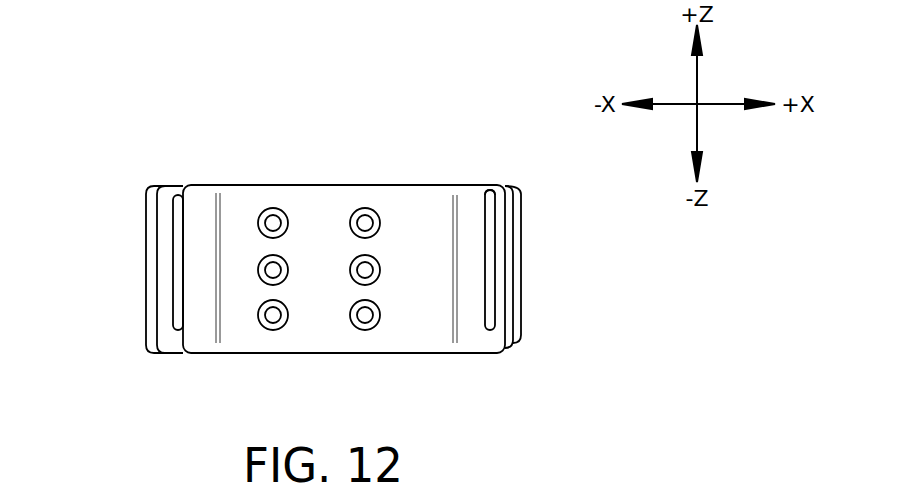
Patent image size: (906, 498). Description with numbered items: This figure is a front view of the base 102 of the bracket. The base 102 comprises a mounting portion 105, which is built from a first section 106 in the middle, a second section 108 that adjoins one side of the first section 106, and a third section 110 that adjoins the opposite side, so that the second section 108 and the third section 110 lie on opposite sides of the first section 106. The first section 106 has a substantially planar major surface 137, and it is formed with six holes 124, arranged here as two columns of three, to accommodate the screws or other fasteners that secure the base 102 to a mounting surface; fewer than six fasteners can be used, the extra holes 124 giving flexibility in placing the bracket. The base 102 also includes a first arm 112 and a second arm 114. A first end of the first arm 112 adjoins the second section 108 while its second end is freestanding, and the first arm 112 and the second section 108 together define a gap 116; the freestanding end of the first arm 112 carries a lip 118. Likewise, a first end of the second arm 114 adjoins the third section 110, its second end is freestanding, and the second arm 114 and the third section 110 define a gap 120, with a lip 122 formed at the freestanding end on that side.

The base 102 is at (403, 147).
The mounting portion 105 is at (270, 172).
The first section 106 is at (331, 188).
The second section 108 is at (475, 171).
The third section 110 is at (202, 172).
The first arm 112 is at (508, 277).
The second arm 114 is at (163, 270).
The gap 116 is at (490, 310).
The lip 118 is at (490, 190).
The gap 120 is at (178, 310).
The lip 122 is at (178, 192).
The holes 124 is at (288, 223).
The major surface 137 is at (422, 335).